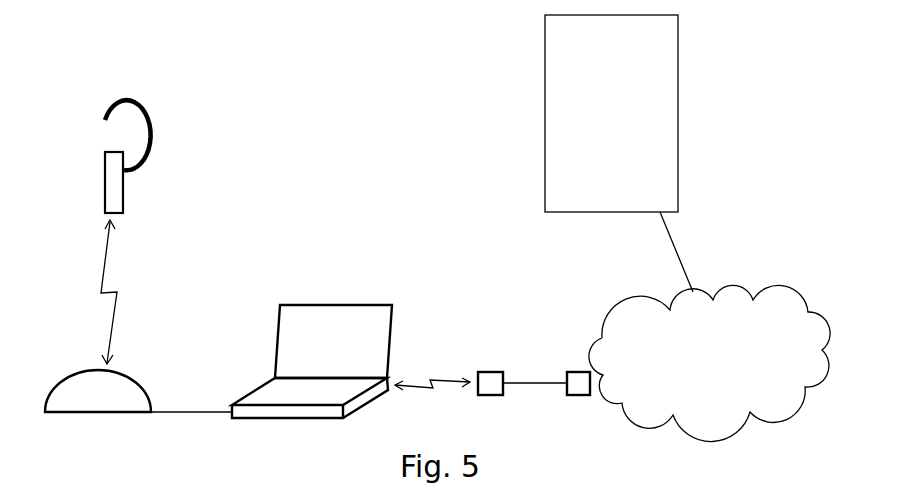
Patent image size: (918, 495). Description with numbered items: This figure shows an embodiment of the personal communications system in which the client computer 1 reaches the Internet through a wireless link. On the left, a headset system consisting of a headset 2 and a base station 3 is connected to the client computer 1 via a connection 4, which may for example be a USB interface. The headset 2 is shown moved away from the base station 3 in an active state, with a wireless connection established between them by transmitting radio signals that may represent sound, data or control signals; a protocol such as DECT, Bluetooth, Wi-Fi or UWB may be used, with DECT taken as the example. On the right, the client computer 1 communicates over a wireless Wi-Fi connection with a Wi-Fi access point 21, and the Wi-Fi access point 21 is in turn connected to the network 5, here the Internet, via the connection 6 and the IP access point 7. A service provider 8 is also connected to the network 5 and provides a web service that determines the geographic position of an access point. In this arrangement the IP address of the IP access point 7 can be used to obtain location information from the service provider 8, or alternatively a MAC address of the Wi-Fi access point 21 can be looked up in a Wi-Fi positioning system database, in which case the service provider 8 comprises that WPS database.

The client computer 1 is at (370, 305).
The headset 2 is at (105, 168).
The base station 3 is at (139, 382).
The connection 4 is at (202, 410).
The network 5 is at (738, 288).
The connection 6 is at (530, 380).
The IP access point 7 is at (578, 395).
The service provider 8 is at (678, 70).
The Wi-Fi access point 21 is at (480, 395).